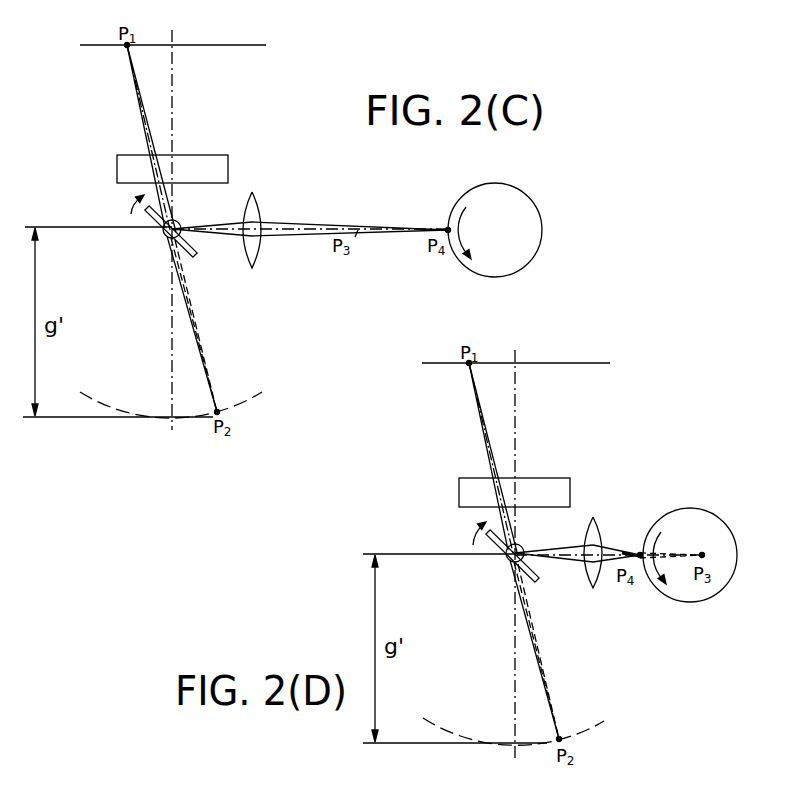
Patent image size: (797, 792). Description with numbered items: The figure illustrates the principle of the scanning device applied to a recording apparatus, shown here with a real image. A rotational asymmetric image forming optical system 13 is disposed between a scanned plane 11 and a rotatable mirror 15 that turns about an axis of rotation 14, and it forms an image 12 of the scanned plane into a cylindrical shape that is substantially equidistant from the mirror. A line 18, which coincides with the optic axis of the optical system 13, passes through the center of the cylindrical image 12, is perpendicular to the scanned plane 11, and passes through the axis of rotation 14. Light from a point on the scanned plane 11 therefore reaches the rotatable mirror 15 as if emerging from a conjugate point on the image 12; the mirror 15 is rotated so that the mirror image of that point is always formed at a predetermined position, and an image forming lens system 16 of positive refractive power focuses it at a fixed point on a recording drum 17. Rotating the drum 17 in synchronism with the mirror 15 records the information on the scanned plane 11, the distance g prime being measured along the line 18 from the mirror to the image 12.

In FIG. 2C, the scanned plane 11 is at (227, 45).
In FIG. 2D, the scanned plane 11 is at (576, 363).
In FIG. 2C, the image of the scanned plane 12 is at (258, 397).
In FIG. 2D, the image of the scanned plane 12 is at (601, 722).
In FIG. 2C, the rotational asymmetric image forming optical system 13 is at (216, 155).
In FIG. 2D, the rotational asymmetric image forming optical system 13 is at (570, 492).
In FIG. 2C, the axis of rotation 14 is at (167, 235).
In FIG. 2D, the axis of rotation 14 is at (508, 562).
In FIG. 2C, the rotatable mirror 15 is at (193, 255).
In FIG. 2D, the rotatable mirror 15 is at (537, 580).
In FIG. 2C, the image forming lens system 16 is at (258, 250).
In FIG. 2D, the image forming lens system 16 is at (594, 588).
In FIG. 2C, the recording drum 17 is at (543, 230).
In FIG. 2D, the recording drum 17 is at (683, 602).
In FIG. 2C, the line 18 is at (175, 95).
In FIG. 2D, the line 18 is at (518, 432).